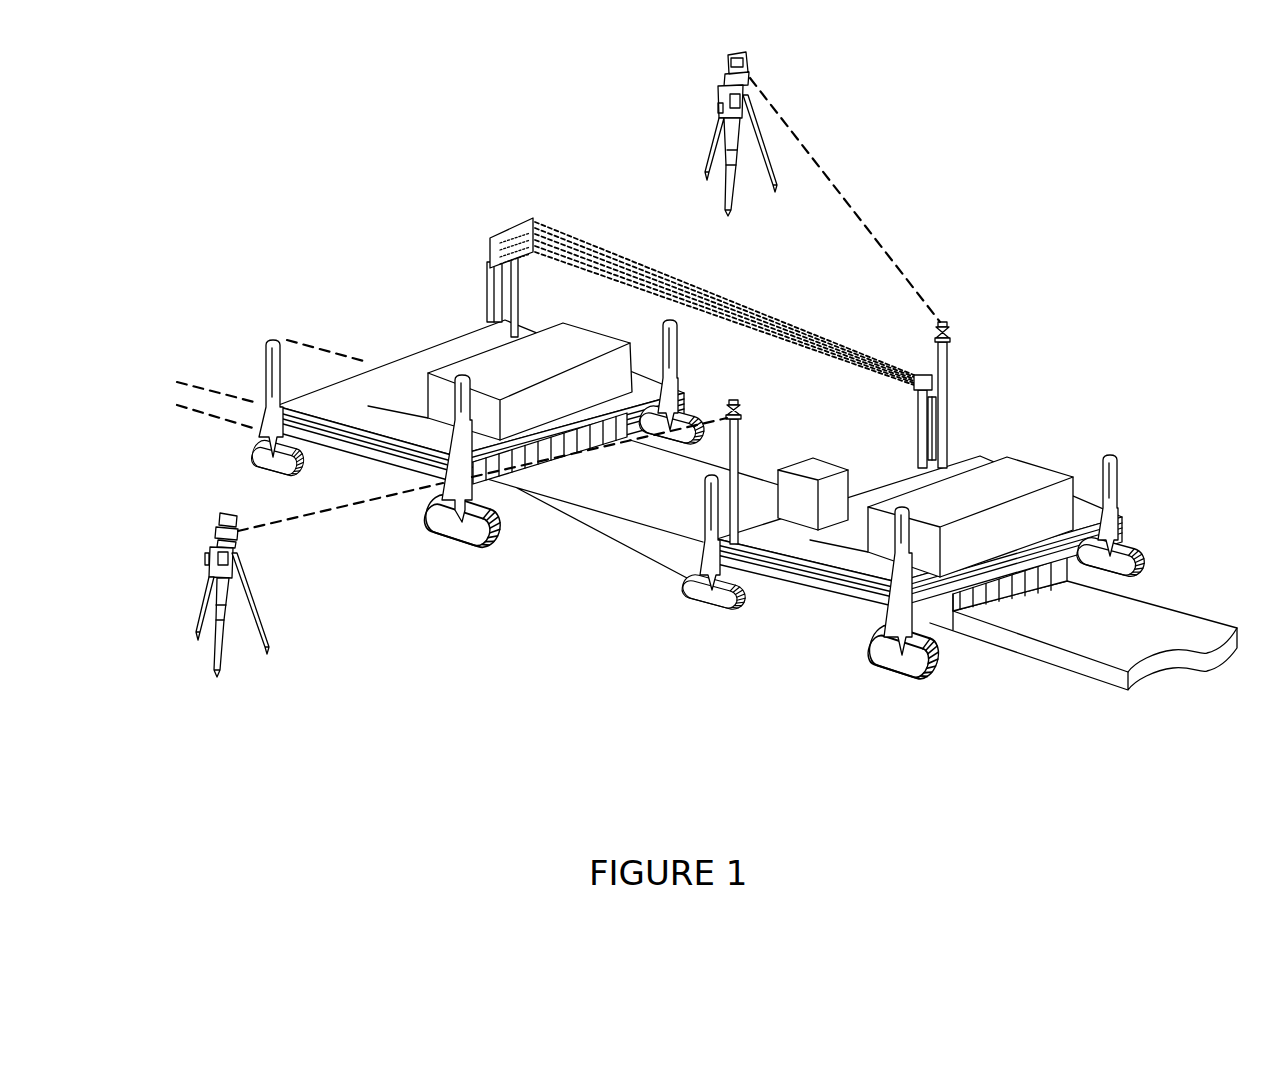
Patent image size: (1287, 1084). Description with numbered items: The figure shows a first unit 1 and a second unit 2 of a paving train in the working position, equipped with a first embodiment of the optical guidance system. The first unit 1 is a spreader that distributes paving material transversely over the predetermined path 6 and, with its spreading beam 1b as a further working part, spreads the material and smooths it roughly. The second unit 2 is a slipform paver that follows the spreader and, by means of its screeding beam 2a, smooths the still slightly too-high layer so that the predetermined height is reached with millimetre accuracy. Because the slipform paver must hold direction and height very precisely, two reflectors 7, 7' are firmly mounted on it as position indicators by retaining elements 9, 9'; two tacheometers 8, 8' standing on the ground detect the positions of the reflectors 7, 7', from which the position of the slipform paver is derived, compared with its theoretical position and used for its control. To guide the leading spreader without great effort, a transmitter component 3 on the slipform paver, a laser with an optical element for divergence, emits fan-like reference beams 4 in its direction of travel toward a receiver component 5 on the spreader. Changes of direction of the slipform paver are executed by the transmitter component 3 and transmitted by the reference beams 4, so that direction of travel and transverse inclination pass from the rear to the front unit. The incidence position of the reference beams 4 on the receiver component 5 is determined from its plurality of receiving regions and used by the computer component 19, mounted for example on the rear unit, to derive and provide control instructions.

The first unit 1 is at (415, 305).
The spreading beam 1b is at (537, 473).
The second unit 2 is at (1035, 419).
The screeding beam 2a is at (997, 597).
The transmitter component 3 is at (917, 377).
The reference beams 4 is at (669, 267).
The receiver component 5 is at (493, 243).
The predetermined path 6 is at (236, 339).
The reflector 7 is at (978, 303).
The reflector 7' is at (773, 409).
The tacheometer 8 is at (698, 131).
The tacheometer 8' is at (284, 598).
The retaining element 9 is at (972, 401).
The retaining element 9' is at (768, 481).
The computer component 19 is at (811, 510).